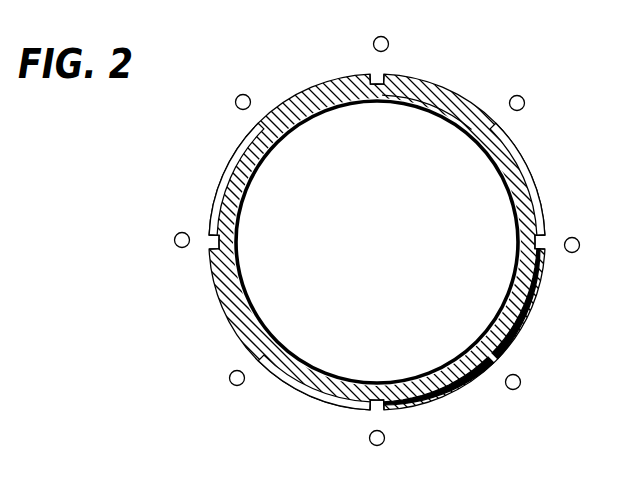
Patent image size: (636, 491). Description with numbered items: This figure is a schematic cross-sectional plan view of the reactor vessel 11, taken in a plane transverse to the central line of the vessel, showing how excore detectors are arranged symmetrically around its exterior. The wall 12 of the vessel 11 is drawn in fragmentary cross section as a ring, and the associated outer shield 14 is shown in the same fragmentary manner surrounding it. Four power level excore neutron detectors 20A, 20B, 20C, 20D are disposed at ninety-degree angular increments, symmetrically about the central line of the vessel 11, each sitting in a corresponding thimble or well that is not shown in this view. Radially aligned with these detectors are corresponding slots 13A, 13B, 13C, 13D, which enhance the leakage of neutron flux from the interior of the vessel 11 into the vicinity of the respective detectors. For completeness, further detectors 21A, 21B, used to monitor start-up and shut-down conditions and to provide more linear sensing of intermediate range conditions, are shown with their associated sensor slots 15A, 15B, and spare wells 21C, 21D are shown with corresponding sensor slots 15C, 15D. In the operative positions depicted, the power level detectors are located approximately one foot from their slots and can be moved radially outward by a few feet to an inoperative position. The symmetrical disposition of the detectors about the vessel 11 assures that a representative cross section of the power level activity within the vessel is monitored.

The vessel 11 is at (304, 215).
The wall 12 is at (240, 180).
The outer shield 14 is at (233, 153).
The slot 13A is at (500, 357).
The slot 13B is at (498, 128).
The slot 13C is at (236, 179).
The slot 13D is at (255, 360).
The sensor slot 15A is at (373, 410).
The sensor slot 15B is at (381, 76).
The sensor slot 15C is at (210, 238).
The sensor slot 15D is at (548, 242).
The power level excore neutron detector 20A is at (518, 388).
The power level excore neutron detector 20B is at (525, 100).
The power level excore neutron detector 20C is at (235, 102).
The power level excore neutron detector 20D is at (232, 385).
The detector 21A is at (382, 444).
The detector 21B is at (388, 40).
The spare well 21C is at (177, 247).
The spare well 21D is at (580, 242).